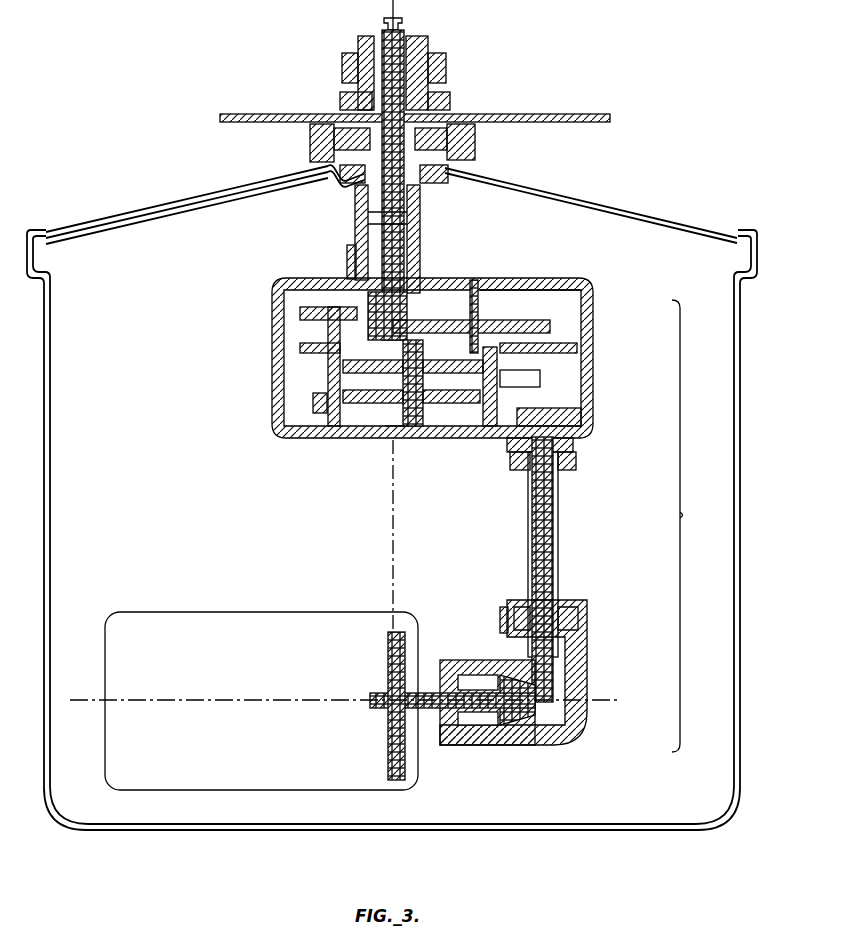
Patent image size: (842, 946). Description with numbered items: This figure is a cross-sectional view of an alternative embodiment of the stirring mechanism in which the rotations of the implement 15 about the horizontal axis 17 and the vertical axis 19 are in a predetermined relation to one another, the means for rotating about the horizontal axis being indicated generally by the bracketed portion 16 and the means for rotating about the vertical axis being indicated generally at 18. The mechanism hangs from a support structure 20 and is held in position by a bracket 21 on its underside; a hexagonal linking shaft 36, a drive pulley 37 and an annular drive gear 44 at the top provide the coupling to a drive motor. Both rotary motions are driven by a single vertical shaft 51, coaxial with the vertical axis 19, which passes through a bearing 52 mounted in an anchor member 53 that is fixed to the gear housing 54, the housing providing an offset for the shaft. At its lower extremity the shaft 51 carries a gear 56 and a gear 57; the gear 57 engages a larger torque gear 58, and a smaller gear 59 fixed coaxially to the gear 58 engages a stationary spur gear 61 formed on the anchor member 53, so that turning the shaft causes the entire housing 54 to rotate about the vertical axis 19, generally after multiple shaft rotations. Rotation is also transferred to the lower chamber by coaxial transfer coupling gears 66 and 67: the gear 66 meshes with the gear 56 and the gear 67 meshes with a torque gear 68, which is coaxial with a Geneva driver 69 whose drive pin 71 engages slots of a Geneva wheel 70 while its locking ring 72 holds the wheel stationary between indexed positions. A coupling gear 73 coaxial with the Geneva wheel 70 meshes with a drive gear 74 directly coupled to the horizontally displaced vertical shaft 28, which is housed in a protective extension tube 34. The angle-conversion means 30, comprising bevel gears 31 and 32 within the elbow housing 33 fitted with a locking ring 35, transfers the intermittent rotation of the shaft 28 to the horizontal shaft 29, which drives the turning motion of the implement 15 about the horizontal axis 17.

The implement 15 is at (165, 612).
The means for rotating the implement about a horizontal axis 16 is at (691, 526).
The horizontal axis 17 is at (200, 700).
The means for rotating the implement about a vertical axis 18 is at (236, 240).
The vertical axis 19 is at (396, 552).
The support structure 20 is at (535, 123).
The bracket 21 is at (476, 143).
The vertical shaft 28 is at (548, 505).
The horizontal shaft 29 is at (412, 680).
The angle-conversion means 30 is at (532, 682).
The bevel gear 31 is at (570, 686).
The bevel gear 32 is at (520, 745).
The elbow housing 33 is at (587, 648).
The extension tube 34 is at (560, 548).
The locking ring 35 is at (562, 600).
The hexagonal linking shaft 36 is at (399, 28).
The drive pulley 37 is at (438, 52).
The annular drive gear 44 is at (448, 92).
The vertical shaft 51 is at (368, 210).
The bearing 52 is at (410, 242).
The anchor member 53 is at (422, 211).
The gear housing 54 is at (596, 320).
The gear 56 is at (347, 265).
The gear 57 is at (300, 346).
The torque gear 58 is at (592, 294).
The gear 59 is at (488, 284).
The spur gear 61 is at (472, 282).
The transfer coupling gear 66 is at (300, 307).
The transfer coupling gear 67 is at (313, 402).
The torque gear 68 is at (372, 438).
The Geneva driver 69 is at (343, 366).
The Geneva wheel 70 is at (540, 378).
The drive pin 71 is at (428, 438).
The locking ring 72 is at (392, 438).
The coupling gear 73 is at (466, 438).
The drive gear 74 is at (575, 416).